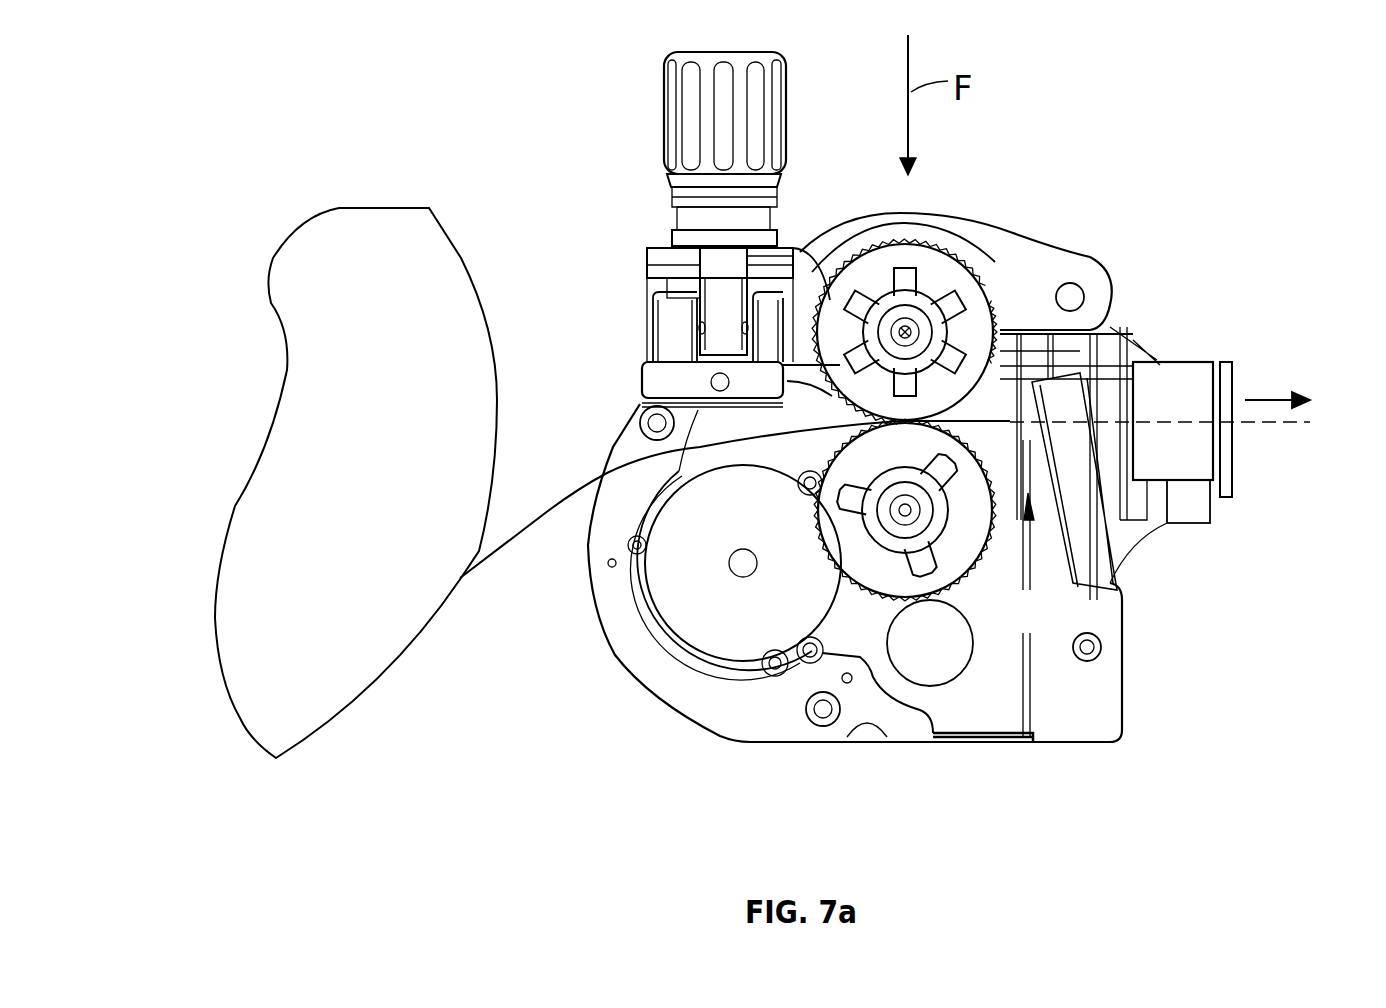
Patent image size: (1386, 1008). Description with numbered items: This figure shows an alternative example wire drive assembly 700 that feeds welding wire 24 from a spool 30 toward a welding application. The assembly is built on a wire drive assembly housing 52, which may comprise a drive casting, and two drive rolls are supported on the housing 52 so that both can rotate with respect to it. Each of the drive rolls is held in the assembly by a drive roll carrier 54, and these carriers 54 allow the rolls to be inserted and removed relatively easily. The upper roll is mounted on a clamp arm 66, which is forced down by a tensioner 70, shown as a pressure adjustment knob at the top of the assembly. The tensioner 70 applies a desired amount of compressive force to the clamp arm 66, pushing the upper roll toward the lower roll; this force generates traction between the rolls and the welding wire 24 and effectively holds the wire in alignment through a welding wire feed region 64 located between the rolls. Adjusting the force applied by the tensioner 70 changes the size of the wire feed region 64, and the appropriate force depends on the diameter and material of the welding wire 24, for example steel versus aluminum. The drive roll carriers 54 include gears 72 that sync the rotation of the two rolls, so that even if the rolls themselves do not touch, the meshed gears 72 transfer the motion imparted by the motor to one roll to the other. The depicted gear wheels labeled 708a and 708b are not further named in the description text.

The welding wire 24 is at (1280, 427).
The spool 30 is at (392, 468).
The wire drive assembly housing 52 is at (778, 725).
The drive roll carriers 54 is at (880, 305).
The welding wire feed region 64 is at (950, 424).
The clamp arm 66 is at (915, 222).
The tensioner 70 is at (725, 52).
The gears 72 is at (962, 285).
The wire drive assembly 700 is at (1140, 130).
The lower drive gear 708a is at (943, 524).
The upper drive gear 708b is at (988, 282).